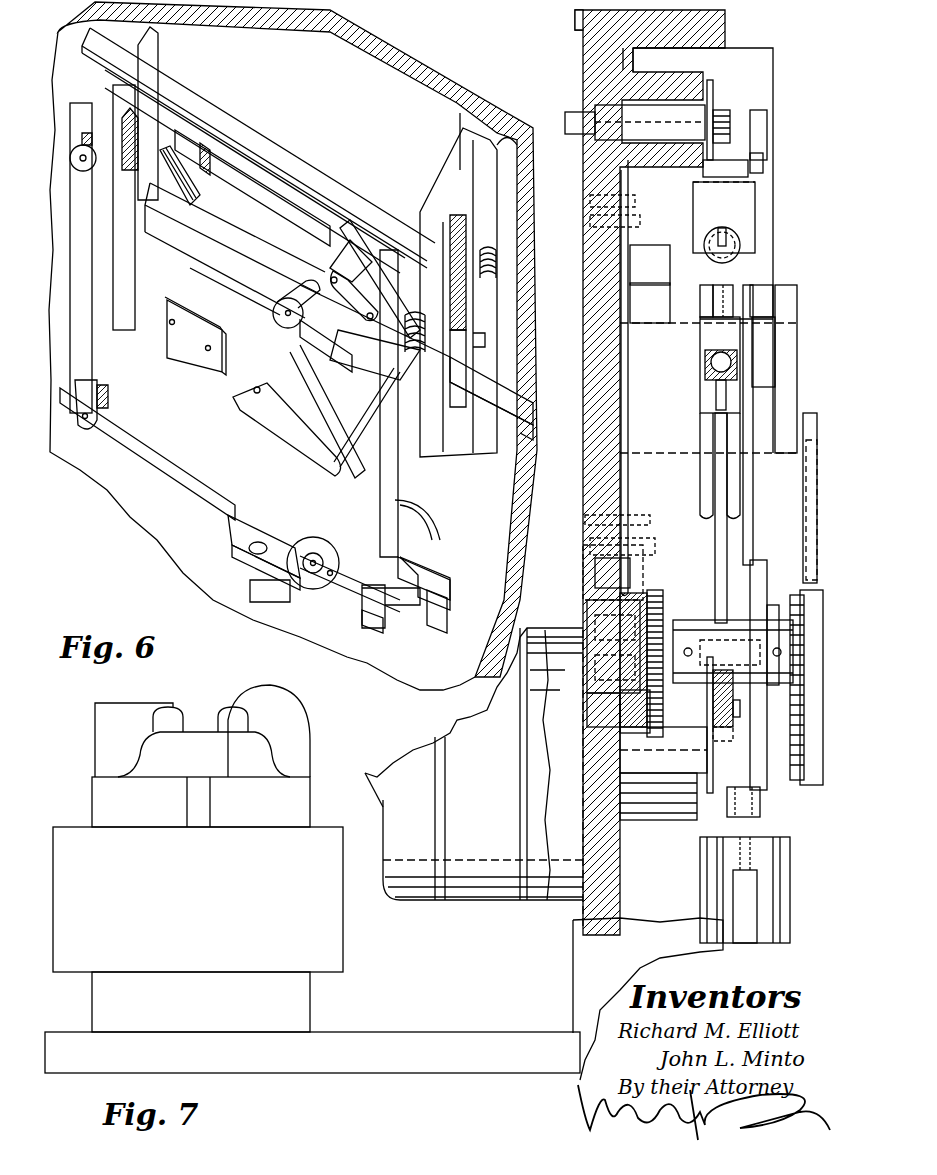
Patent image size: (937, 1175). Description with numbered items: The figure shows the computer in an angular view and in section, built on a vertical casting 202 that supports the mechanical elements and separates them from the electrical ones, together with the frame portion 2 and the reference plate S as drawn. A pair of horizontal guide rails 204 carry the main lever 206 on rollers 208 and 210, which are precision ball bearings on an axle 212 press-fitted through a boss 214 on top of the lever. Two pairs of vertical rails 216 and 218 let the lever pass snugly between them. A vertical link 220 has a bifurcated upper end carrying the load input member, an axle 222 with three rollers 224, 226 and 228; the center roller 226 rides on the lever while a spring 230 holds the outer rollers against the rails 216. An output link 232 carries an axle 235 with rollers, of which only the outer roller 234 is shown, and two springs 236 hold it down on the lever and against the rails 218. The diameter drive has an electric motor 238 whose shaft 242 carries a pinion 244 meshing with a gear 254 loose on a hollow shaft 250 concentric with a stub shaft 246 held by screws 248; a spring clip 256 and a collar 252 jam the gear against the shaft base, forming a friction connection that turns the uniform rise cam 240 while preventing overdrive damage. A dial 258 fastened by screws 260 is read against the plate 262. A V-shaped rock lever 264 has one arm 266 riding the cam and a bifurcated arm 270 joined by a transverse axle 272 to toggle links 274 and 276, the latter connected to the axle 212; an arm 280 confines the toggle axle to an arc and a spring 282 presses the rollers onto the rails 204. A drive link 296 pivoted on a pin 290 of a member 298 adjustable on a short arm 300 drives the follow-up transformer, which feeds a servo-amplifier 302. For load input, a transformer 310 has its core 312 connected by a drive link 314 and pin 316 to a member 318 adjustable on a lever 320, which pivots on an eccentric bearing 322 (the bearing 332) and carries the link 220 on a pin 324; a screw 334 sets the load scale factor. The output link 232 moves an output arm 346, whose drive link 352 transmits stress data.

In FIG. 7, the machine frame 2 is at (474, 779).
In FIG. 6, the vertical casting 202 is at (372, 68).
In FIG. 6, the horizontal guide rails 204 is at (260, 205).
In FIG. 7, the horizontal guide rails 204 is at (792, 350).
In FIG. 6, the main lever 206 is at (522, 412).
In FIG. 7, the main lever 206 is at (712, 345).
In FIG. 6, the roller 208 is at (300, 228).
In FIG. 6, the roller 210 is at (268, 306).
In FIG. 6, the axle 212 is at (285, 320).
In FIG. 7, the axle 212 is at (785, 305).
In FIG. 6, the boss 214 is at (297, 258).
In FIG. 7, the boss 214 is at (745, 290).
In FIG. 6, the vertical rails 216 is at (118, 105).
In FIG. 7, the vertical rails 216 is at (773, 213).
In FIG. 6, the vertical rails 218 is at (470, 230).
In FIG. 7, the vertical rails 218 is at (773, 70).
In FIG. 6, the link 220 is at (100, 383).
In FIG. 7, the link 220 is at (715, 475).
In FIG. 6, the axle 222 is at (165, 170).
In FIG. 7, the axle 222 is at (712, 318).
In FIG. 7, the ball bearing roller 224 is at (675, 303).
In FIG. 7, the ball bearing roller 226 is at (715, 288).
In FIG. 6, the ball bearing roller 228 is at (78, 146).
In FIG. 7, the ball bearing roller 228 is at (765, 290).
In FIG. 7, the spring 230 is at (737, 362).
In FIG. 7, the link 232 is at (748, 170).
In FIG. 6, the outer roller 234 is at (398, 405).
In FIG. 6, the axle 235 is at (355, 404).
In FIG. 6, the springs 236 is at (498, 262).
In FIG. 7, the electric motor 238 is at (470, 900).
In FIG. 7, the uniform rise cam 240 is at (740, 600).
In FIG. 7, the shaft 242 is at (635, 733).
In FIG. 7, the pinion 244 is at (663, 754).
In FIG. 7, the stub shaft 246 is at (625, 603).
In FIG. 7, the screws 248 is at (578, 630).
In FIG. 7, the hollow shaft 250 is at (630, 585).
In FIG. 7, the collar 252 is at (700, 622).
In FIG. 7, the gear 254 is at (642, 595).
In FIG. 7, the spring clip 256 is at (665, 620).
In FIG. 7, the dial 258 is at (785, 616).
In FIG. 7, the screws 260 is at (790, 605).
In FIG. 6, the plate 262 is at (207, 374).
In FIG. 7, the plate 262 is at (805, 492).
In FIG. 6, the V-shaped rock lever 264 is at (370, 510).
In FIG. 6, the arm 266 is at (278, 420).
In FIG. 6, the arm 270 is at (398, 440).
In FIG. 6, the transverse axle 272 is at (330, 346).
In FIG. 6, the links 274 is at (362, 296).
In FIG. 6, the links 276 is at (333, 240).
In FIG. 6, the arm 280 is at (360, 230).
In FIG. 7, the spring 282 is at (740, 258).
In FIG. 6, the pin 290 is at (325, 564).
In FIG. 6, the drive link 296 is at (362, 603).
In FIG. 6, the member 298 is at (432, 632).
In FIG. 6, the short arm 300 is at (448, 580).
In FIG. 7, the servo-amplifier 302 is at (340, 968).
In FIG. 7, the differential transformer 310 is at (790, 893).
In FIG. 7, the core 312 is at (760, 920).
In FIG. 7, the drive link 314 is at (760, 812).
In FIG. 7, the pin 316 is at (733, 735).
In FIG. 7, the member 318 is at (733, 715).
In FIG. 7, the lever 320 is at (707, 730).
In FIG. 7, the eccentric bearing 322 is at (655, 820).
In FIG. 7, the pin 324 is at (740, 708).
In FIG. 6, the bearing 332 is at (262, 515).
In FIG. 6, the screw 334 is at (250, 560).
In FIG. 7, the output arm 346 is at (725, 128).
In FIG. 7, the drive link 352 is at (768, 132).
In FIG. 6, the sheet S is at (172, 300).
In FIG. 7, the sheet S is at (803, 420).